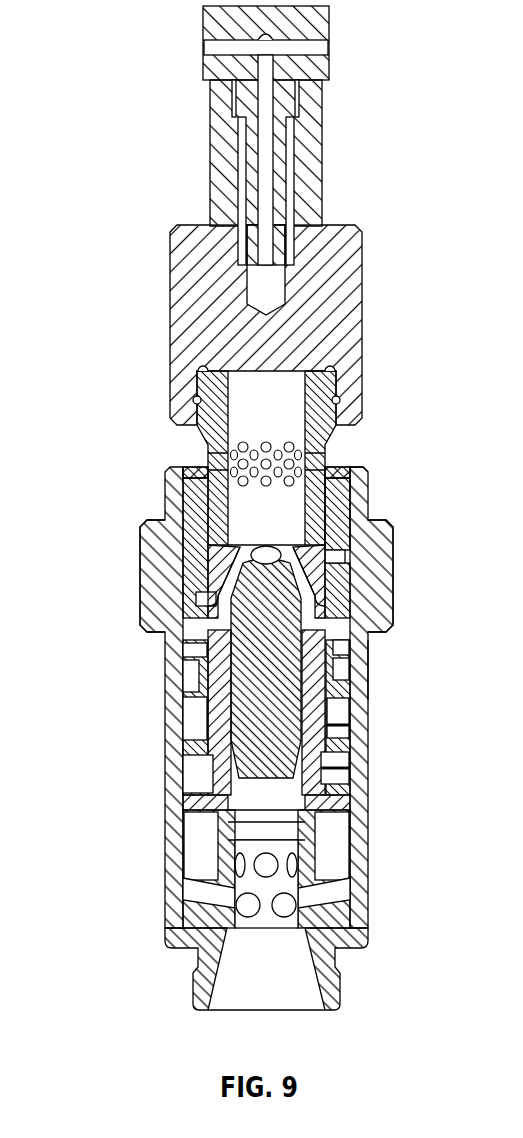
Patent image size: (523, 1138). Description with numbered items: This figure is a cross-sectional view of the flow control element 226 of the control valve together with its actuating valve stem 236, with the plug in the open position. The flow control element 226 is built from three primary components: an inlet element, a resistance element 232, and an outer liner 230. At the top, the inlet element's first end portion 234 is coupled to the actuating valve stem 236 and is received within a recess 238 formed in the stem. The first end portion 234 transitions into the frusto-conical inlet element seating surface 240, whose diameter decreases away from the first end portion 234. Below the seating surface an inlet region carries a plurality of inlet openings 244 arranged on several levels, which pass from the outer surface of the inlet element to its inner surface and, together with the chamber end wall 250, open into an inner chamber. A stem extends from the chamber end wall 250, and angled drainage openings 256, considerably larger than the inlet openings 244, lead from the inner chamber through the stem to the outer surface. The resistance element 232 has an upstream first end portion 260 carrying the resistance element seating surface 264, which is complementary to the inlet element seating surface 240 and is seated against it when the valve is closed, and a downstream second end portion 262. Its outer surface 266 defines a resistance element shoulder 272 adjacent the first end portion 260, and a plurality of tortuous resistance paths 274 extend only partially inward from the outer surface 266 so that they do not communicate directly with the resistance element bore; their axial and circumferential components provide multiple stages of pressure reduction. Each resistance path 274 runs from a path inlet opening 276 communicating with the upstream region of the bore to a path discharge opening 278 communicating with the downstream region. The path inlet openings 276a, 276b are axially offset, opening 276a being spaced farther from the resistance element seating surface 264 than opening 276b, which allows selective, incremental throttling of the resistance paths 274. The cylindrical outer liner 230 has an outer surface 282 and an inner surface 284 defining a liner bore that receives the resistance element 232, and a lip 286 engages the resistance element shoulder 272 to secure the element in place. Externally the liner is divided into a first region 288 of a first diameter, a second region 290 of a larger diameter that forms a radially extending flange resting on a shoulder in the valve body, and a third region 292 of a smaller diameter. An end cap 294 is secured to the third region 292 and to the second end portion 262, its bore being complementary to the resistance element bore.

The flow control element 226 is at (97, 160).
The outer liner 230 is at (371, 671).
The resistance element 232 is at (218, 713).
The first end portion 234 is at (197, 383).
The actuating valve stem 236 is at (183, 254).
The recess 238 is at (335, 383).
The inlet element seating surface 240 is at (333, 430).
The inlet openings 244 is at (233, 455).
The chamber end wall 250 is at (246, 549).
The drainage openings 256 is at (300, 585).
The first end portion 260 is at (337, 490).
The second end portion 262 is at (198, 860).
The resistance element seating surface 264 is at (328, 463).
The outer surface 266 is at (183, 743).
The resistance element shoulder 272 is at (196, 468).
The resistance paths 274 is at (340, 773).
The path inlet opening 276 is at (260, 574).
The path inlet opening 276a is at (203, 601).
The path inlet opening 276b is at (340, 554).
The path discharge opening 278 is at (330, 906).
The outer surface 282 is at (165, 688).
The inner surface 284 is at (342, 853).
The lip 286 is at (358, 471).
The first region 288 is at (165, 494).
The second region 290 is at (140, 570).
The third region 292 is at (165, 798).
The end cap 294 is at (349, 965).